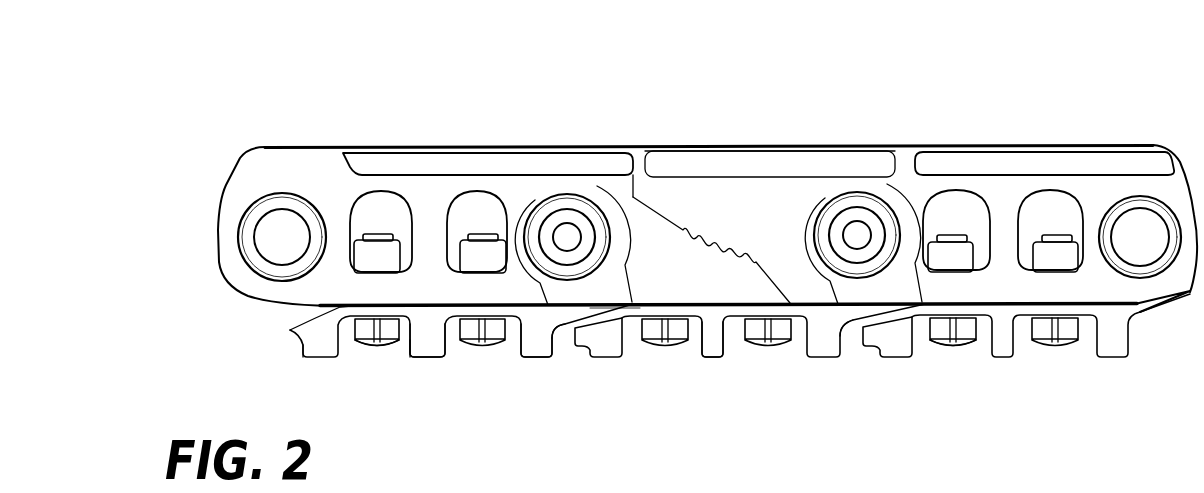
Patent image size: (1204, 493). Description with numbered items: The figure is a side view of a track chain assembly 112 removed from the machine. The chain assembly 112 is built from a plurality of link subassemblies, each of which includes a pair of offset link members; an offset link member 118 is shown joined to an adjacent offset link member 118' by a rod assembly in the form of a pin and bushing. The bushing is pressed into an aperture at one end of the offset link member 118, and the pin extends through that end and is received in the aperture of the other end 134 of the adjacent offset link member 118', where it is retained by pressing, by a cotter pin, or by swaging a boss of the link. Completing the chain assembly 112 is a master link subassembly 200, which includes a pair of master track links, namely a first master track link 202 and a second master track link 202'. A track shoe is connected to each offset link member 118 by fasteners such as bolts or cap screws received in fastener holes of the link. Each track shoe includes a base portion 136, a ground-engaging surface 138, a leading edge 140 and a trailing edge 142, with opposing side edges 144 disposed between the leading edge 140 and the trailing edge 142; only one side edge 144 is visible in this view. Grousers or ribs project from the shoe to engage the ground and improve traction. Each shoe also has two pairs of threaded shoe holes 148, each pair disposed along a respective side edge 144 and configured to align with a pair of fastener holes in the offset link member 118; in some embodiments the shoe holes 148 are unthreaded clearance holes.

The chain assembly 112 is at (1100, 124).
The offset link member 118 is at (1044, 127).
The adjacent offset link member 118' is at (470, 127).
The other end 134 is at (633, 190).
The base portion 136 is at (460, 350).
The ground-engaging surface 138 is at (356, 350).
The leading edge 140 is at (608, 302).
The trailing edge 142 is at (290, 330).
The side edge 144 is at (540, 360).
The threaded shoe hole 148 is at (460, 318).
The master link subassembly 200 is at (726, 139).
The first master track link 202 is at (770, 127).
The second master track link 202' is at (718, 348).